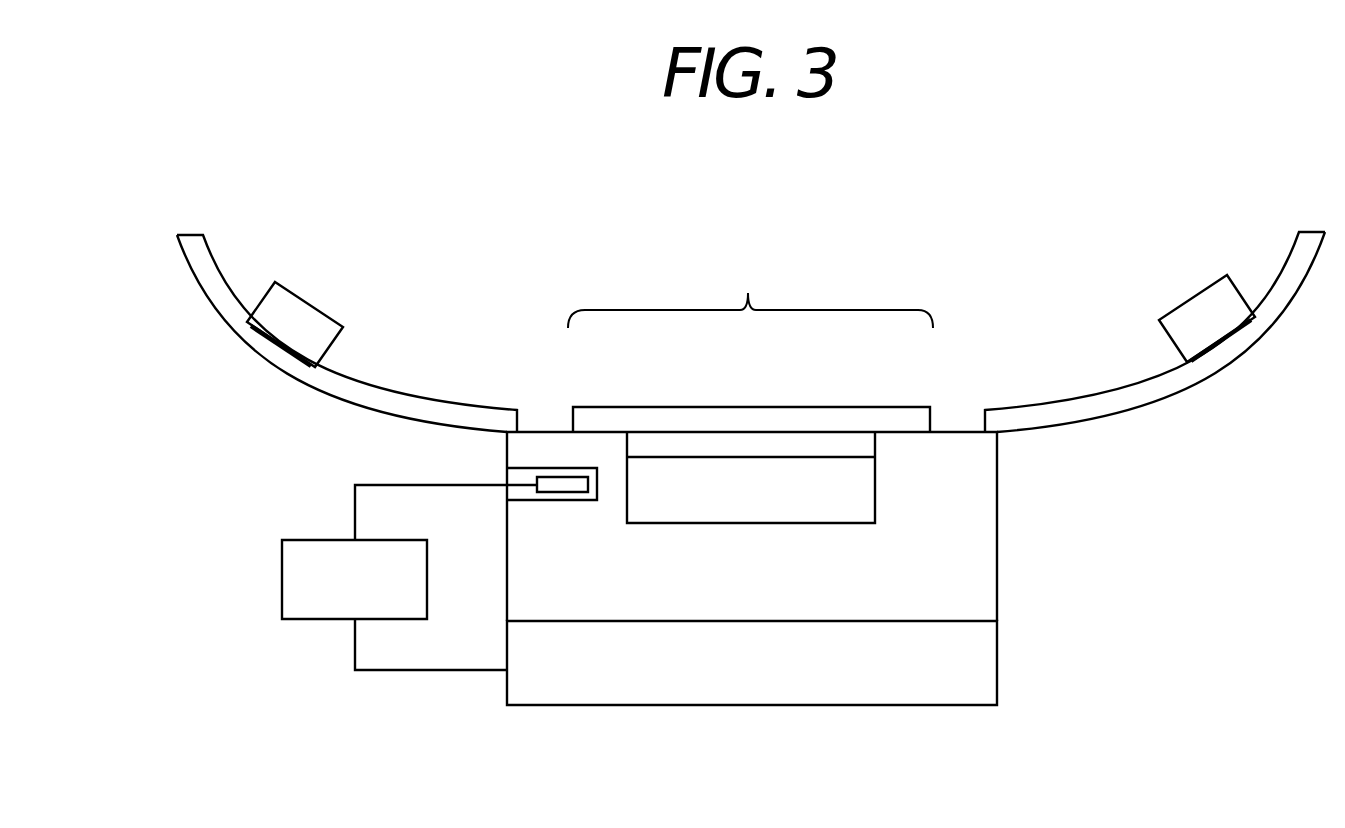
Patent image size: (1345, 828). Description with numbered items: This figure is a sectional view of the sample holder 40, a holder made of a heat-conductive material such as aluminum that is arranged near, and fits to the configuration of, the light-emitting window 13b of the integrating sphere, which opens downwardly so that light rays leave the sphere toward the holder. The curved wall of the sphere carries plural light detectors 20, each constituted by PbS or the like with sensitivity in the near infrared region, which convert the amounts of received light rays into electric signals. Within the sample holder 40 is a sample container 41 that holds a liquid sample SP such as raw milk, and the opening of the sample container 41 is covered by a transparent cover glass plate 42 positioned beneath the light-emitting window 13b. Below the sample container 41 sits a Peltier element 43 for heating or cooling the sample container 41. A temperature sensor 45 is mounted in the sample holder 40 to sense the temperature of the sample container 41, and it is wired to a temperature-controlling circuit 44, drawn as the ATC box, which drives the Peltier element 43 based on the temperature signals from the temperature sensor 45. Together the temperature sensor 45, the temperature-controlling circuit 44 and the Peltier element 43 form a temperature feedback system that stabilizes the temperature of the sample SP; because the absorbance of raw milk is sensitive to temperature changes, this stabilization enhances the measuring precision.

The light-emitting window 13b is at (750, 290).
The light detector 20 is at (305, 318).
The sample holder 40 is at (720, 479).
The sample container 41 is at (982, 565).
The transparent cover glass plate 42 is at (718, 417).
The Peltier element 43 is at (985, 662).
The temperature-controlling circuit 44 is at (282, 578).
The temperature sensor 45 is at (560, 482).
The liquid sample SP is at (835, 487).